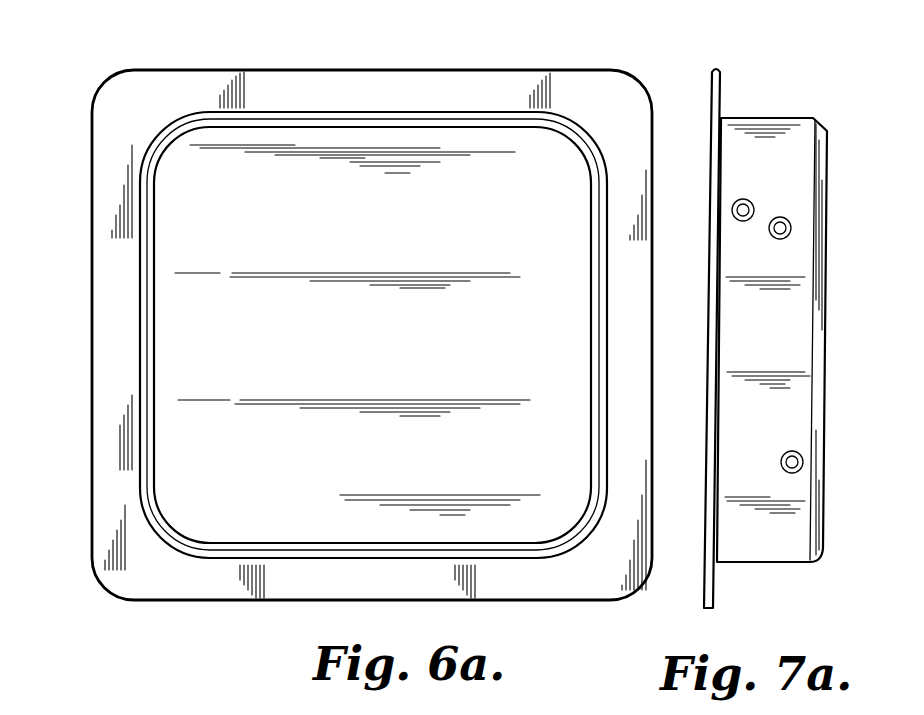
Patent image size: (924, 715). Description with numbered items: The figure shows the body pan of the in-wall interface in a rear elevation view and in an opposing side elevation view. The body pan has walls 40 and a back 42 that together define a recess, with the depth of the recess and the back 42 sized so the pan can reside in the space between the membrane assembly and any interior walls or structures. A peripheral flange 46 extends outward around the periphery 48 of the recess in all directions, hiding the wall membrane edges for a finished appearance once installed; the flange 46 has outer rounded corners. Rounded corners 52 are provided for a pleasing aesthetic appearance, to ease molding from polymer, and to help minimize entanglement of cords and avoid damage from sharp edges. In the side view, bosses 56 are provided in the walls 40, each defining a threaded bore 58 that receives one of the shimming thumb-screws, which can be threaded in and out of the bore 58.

In FIG. 6A, the walls 40 is at (437, 113).
In FIG. 7A, the walls 40 is at (775, 354).
In FIG. 6A, the back 42 is at (398, 228).
In FIG. 7A, the back 42 is at (825, 363).
In FIG. 6A, the peripheral flange 46 is at (618, 90).
In FIG. 7A, the peripheral flange 46 is at (721, 88).
In FIG. 6A, the periphery 48 is at (150, 180).
In FIG. 6A, the rounded corners 52 is at (167, 140).
In FIG. 7A, the bosses 56 is at (746, 221).
In FIG. 7A, the threaded bore 58 is at (780, 228).